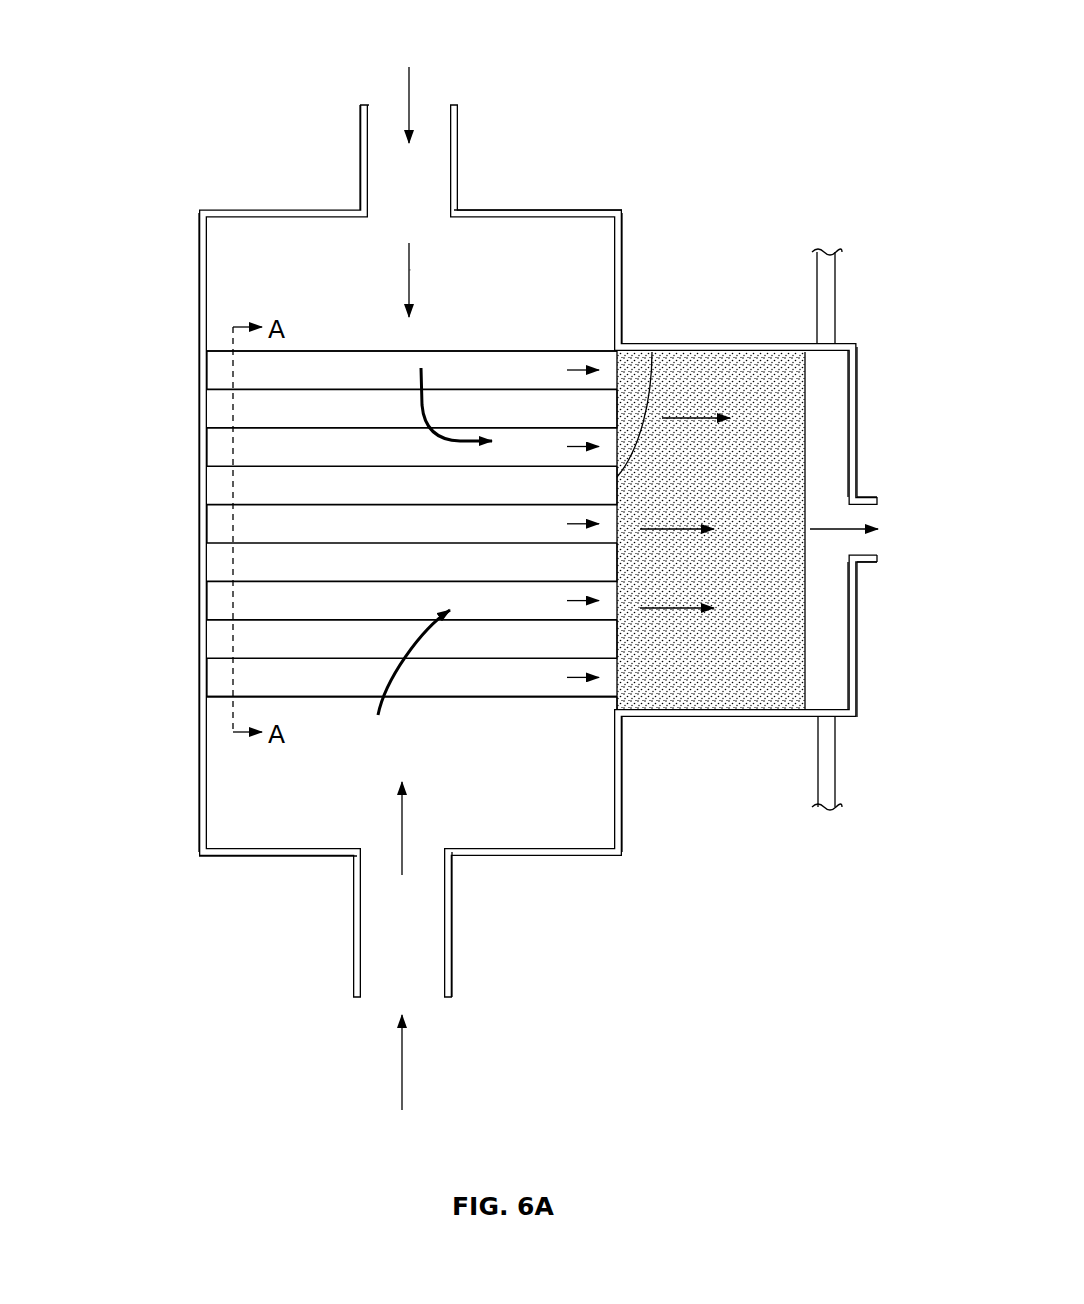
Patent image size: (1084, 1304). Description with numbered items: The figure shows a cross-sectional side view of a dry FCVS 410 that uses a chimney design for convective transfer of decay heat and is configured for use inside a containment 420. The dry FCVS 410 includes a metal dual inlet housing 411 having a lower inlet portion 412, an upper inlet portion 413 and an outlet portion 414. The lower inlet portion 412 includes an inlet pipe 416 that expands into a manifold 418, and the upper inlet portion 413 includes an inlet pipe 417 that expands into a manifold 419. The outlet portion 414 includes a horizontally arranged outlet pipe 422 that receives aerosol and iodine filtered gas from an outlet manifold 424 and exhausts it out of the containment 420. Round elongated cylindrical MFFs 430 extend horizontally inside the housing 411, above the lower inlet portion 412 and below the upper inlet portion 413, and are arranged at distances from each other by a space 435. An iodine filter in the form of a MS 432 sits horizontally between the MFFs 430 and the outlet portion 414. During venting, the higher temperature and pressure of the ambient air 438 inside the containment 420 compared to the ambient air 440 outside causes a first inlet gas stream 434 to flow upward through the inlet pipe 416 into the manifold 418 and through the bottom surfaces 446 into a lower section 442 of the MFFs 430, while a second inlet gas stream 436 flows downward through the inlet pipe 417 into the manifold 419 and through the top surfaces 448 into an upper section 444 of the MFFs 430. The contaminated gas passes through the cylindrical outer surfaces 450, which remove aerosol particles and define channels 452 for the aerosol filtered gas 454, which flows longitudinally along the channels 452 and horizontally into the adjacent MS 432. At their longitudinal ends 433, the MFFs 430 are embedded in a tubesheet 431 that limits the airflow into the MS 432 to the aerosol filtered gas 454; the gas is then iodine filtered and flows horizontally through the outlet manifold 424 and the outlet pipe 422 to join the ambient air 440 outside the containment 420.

The dry FCVS 410 is at (175, 43).
The dual inlet housing 411 is at (199, 790).
The lower inlet portion 412 is at (271, 908).
The upper inlet portion 413 is at (552, 170).
The outlet portion 414 is at (866, 629).
The inlet pipe 416 is at (452, 903).
The inlet pipe 417 is at (360, 130).
The manifold 418 is at (621, 775).
The manifold 419 is at (622, 228).
The containment 420 is at (835, 757).
The outlet pipe 422 is at (873, 497).
The outlet manifold 424 is at (857, 695).
The MFFs 430 is at (317, 362).
The tubesheet 431 is at (652, 352).
The MS 432 is at (692, 370).
The longitudinal ends 433 is at (410, 421).
The first inlet gas stream 434 is at (402, 1057).
The space 435 is at (440, 499).
The second inlet gas stream 436 is at (412, 100).
The ambient air 438 is at (92, 336).
The ambient air 440 is at (897, 306).
The lower section 442 is at (312, 730).
The upper section 444 is at (270, 297).
The bottom surfaces 446 is at (375, 712).
The top surfaces 448 is at (432, 351).
The cylindrical outer surfaces 450 is at (547, 351).
The channels 452 is at (215, 370).
The aerosol filtered gas 454 is at (557, 384).